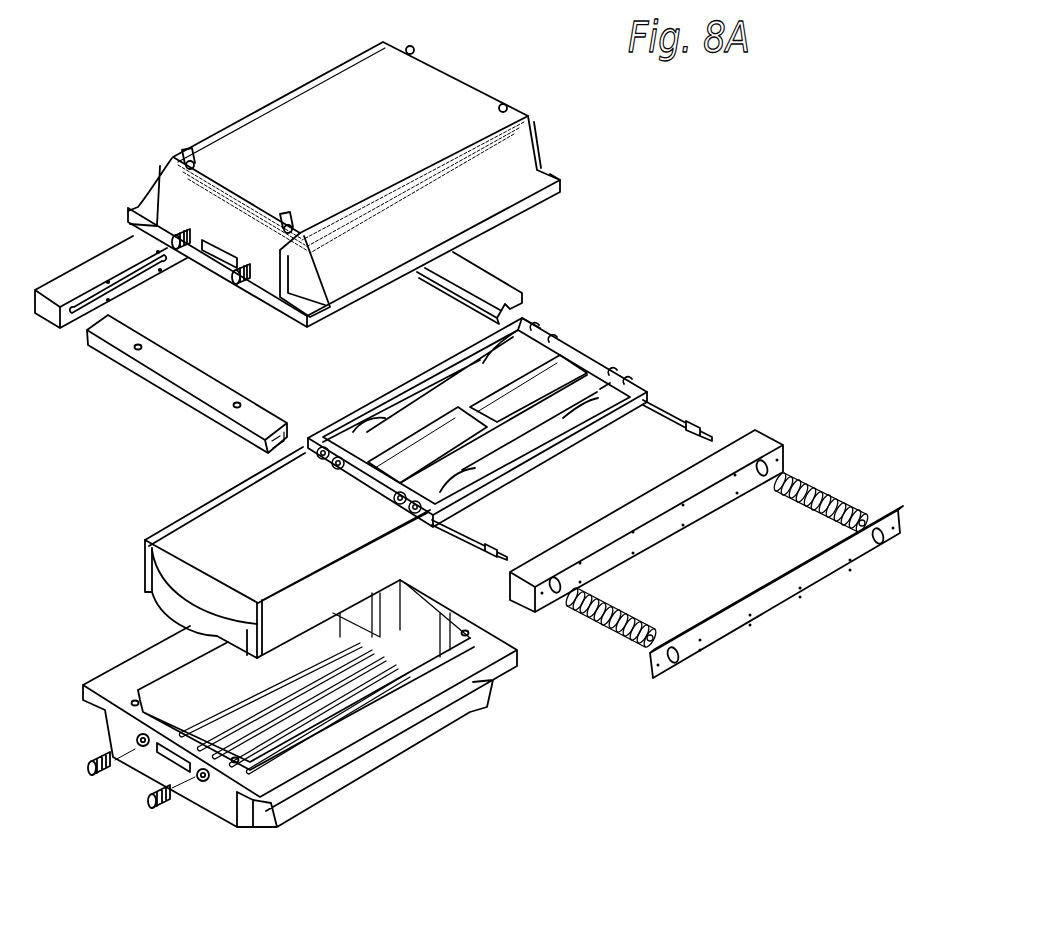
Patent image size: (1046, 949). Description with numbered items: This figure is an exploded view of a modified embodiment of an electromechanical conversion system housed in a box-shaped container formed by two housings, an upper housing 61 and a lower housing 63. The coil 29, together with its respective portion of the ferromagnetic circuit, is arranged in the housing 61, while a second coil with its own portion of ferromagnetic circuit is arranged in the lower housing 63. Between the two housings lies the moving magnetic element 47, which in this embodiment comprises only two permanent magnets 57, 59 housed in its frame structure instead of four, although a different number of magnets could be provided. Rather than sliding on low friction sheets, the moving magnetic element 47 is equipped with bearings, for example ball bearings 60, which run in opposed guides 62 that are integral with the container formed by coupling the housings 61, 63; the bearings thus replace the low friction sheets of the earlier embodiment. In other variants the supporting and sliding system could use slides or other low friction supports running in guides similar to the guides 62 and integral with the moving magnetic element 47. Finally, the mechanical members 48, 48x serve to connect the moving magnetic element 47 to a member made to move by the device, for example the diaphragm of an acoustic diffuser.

The housing 61 is at (338, 82).
The guides 62 is at (462, 293).
The moving magnetic element 47 is at (580, 357).
The permanent magnet 57 is at (528, 347).
The permanent magnet 59 is at (600, 389).
The ball bearings 60 is at (339, 469).
The mechanical member 48 is at (680, 426).
The mechanical member 48x is at (906, 500).
The coil 29 is at (197, 552).
The lower housing 63 is at (393, 745).